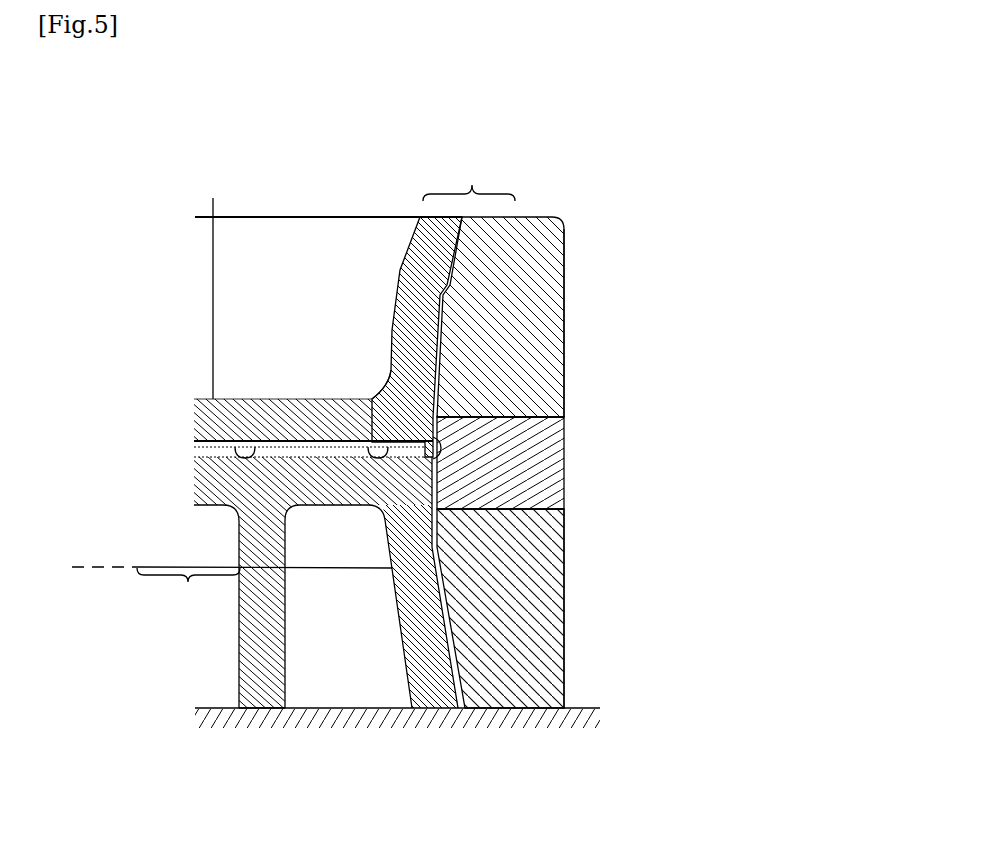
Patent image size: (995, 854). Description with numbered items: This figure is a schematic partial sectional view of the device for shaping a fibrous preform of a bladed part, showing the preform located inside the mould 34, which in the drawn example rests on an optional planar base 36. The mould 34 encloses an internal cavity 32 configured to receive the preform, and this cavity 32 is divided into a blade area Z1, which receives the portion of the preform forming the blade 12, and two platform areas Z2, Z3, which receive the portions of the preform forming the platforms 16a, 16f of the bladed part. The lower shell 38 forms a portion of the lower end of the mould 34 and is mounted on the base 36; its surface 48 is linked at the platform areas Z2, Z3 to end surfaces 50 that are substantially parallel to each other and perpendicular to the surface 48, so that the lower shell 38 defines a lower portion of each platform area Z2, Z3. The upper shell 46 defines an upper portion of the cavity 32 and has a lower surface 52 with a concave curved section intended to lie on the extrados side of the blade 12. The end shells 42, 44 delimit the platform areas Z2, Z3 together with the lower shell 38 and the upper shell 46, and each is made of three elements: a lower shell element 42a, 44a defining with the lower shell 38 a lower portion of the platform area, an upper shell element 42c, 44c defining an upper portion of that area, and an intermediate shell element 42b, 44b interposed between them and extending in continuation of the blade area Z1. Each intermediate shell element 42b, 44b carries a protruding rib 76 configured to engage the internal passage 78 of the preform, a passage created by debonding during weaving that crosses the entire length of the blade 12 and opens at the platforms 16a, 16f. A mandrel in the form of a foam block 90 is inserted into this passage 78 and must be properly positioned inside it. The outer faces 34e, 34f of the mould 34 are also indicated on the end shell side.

The blade 12 is at (217, 437).
The platform 16a is at (581, 522).
The contact surface 16f is at (437, 548).
The internal cavity 32 is at (285, 442).
The mould 34 is at (575, 601).
The outer surface of frame 34e is at (673, 323).
The outer surface of frame 34f is at (564, 313).
The base 36 is at (613, 721).
The lower shell 38 is at (262, 708).
The end shell 42 is at (607, 428).
The end shell 44 is at (607, 428).
The lower shell element 42a is at (566, 608).
The lower shell element 44a is at (555, 655).
The intermediate shell element 42b is at (604, 460).
The intermediate shell element 44b is at (560, 447).
The upper shell element 42c is at (603, 317).
The upper shell element 44c is at (555, 377).
The upper shell 46 is at (404, 266).
The surface 48 is at (309, 447).
The end surface 50 is at (392, 568).
The lower surface 52 is at (234, 440).
The protruding rib 76 is at (432, 453).
The internal passage 78 is at (382, 438).
The foam block 90 is at (213, 465).
The blade area Z1 is at (232, 593).
The platform area Z2 is at (469, 175).
The platform area Z3 is at (469, 175).